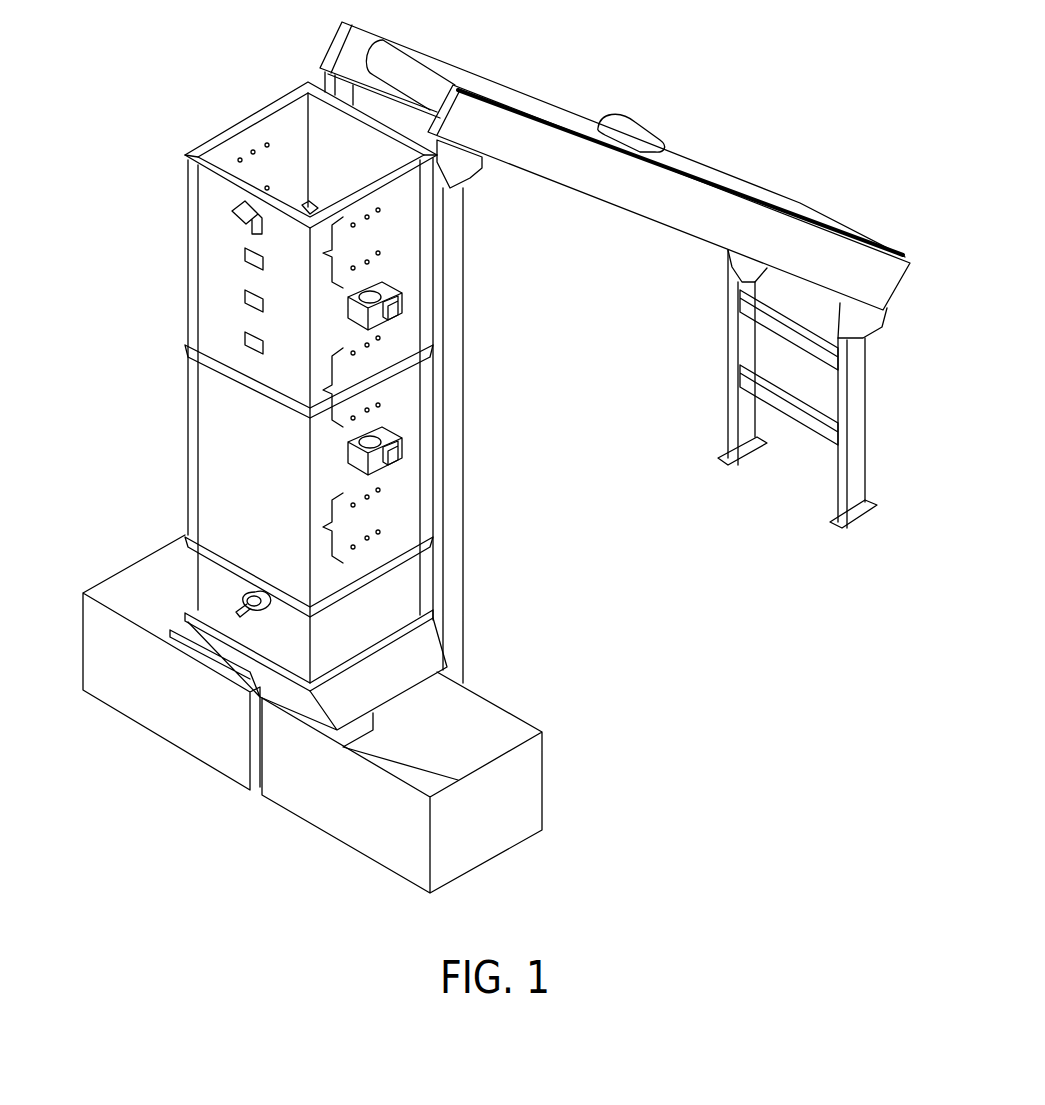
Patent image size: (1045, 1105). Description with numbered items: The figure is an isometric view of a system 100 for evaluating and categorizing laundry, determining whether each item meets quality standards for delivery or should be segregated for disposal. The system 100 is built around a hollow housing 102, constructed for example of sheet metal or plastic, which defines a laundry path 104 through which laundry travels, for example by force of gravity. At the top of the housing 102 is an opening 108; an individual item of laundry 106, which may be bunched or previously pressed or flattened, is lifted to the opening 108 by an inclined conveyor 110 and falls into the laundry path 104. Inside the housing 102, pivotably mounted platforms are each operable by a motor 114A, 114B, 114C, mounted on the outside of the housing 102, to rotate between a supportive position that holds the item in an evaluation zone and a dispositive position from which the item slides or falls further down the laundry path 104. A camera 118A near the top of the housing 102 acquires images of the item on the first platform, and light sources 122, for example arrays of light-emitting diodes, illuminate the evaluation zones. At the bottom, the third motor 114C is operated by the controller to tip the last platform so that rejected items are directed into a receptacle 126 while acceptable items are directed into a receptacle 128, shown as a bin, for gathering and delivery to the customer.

The system 100 is at (136, 122).
The housing 102 is at (190, 232).
The laundry path 104 is at (290, 146).
The item of laundry 106 is at (640, 125).
The opening 108 is at (254, 114).
The conveyor 110 is at (803, 205).
The motor 114A is at (375, 303).
The motor 114B is at (375, 448).
The motor 114C is at (237, 597).
The camera 118A is at (240, 205).
The light sources 122 is at (249, 141).
The receptacle 126 is at (342, 820).
The receptacle 128 is at (115, 693).